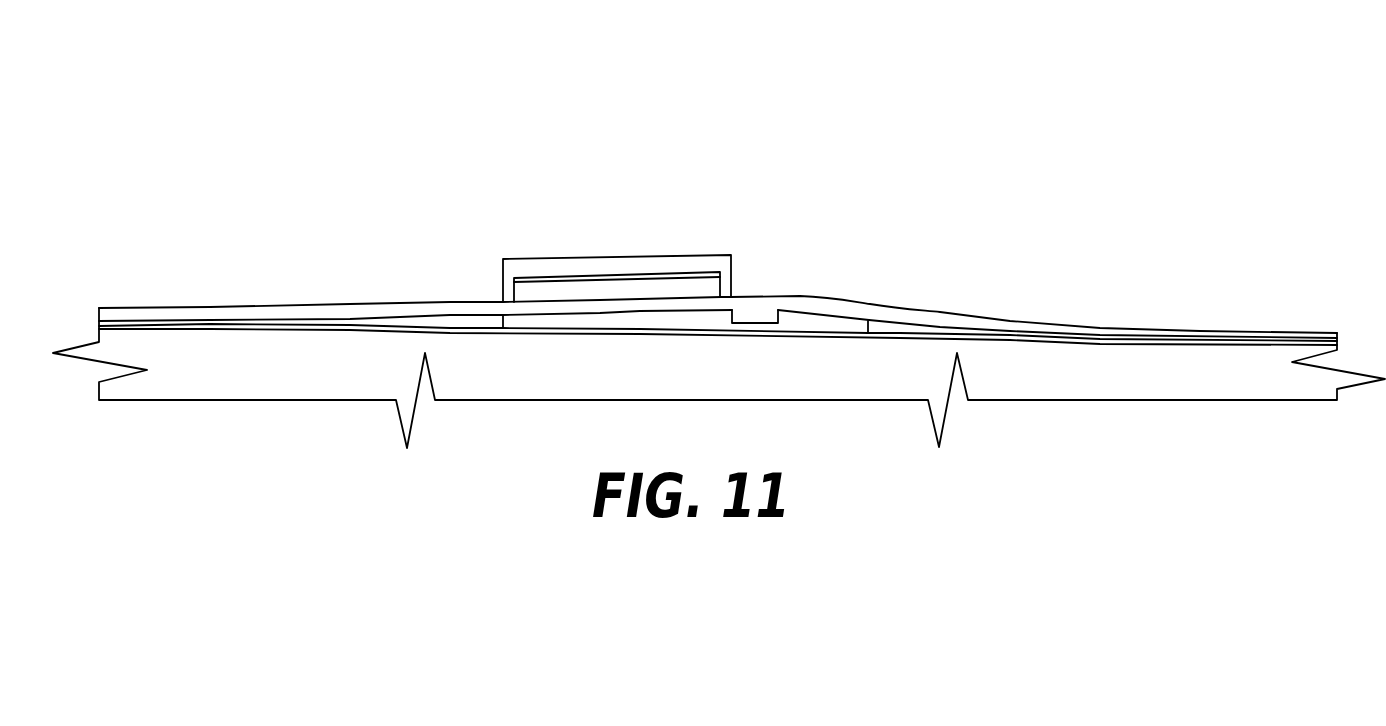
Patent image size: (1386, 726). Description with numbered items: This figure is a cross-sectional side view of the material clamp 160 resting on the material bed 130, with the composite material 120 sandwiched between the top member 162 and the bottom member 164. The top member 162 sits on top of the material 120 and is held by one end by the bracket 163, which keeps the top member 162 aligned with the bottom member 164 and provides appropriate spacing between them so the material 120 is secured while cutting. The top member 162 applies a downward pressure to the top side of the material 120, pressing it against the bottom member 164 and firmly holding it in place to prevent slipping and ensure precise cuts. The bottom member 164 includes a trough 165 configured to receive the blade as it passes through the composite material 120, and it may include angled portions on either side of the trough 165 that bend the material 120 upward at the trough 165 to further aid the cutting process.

The material 120 is at (309, 309).
The material bed 130 is at (305, 380).
The material clamp 160 is at (557, 97).
The top member 162 is at (541, 290).
The bracket 163 is at (712, 262).
The bottom member 164 is at (667, 322).
The trough 165 is at (790, 318).